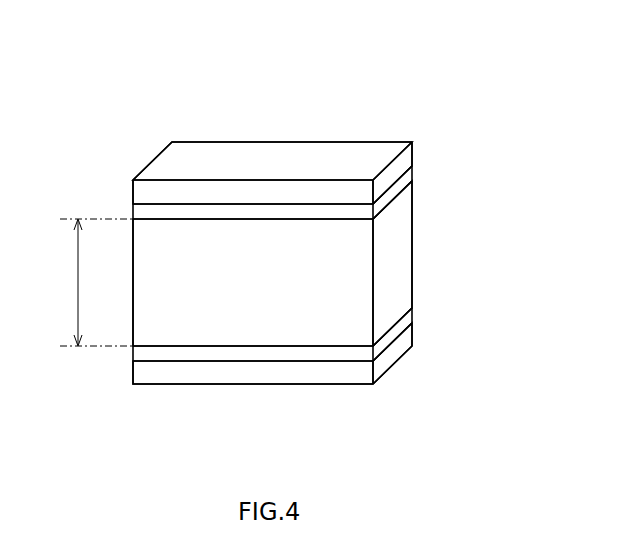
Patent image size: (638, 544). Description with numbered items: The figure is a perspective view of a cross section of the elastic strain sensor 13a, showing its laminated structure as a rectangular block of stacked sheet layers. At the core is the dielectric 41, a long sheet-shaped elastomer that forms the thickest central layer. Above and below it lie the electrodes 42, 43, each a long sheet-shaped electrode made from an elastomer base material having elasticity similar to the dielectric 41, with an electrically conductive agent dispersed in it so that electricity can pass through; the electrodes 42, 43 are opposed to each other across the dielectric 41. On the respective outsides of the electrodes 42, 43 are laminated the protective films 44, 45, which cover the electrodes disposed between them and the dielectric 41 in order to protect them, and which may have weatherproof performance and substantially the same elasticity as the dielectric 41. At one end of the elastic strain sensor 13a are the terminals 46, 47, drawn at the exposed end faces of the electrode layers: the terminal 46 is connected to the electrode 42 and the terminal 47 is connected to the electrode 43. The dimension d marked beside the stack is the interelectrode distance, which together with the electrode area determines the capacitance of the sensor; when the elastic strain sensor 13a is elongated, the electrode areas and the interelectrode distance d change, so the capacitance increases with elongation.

The elastic strain sensor 13a is at (117, 95).
The dielectric 41 is at (412, 258).
The electrode 42 is at (132, 214).
The electrode 43 is at (133, 355).
The protective film 44 is at (372, 147).
The protective film 45 is at (335, 383).
The terminal 46 is at (392, 191).
The terminal 47 is at (392, 333).
The interelectrode distance d is at (92, 282).